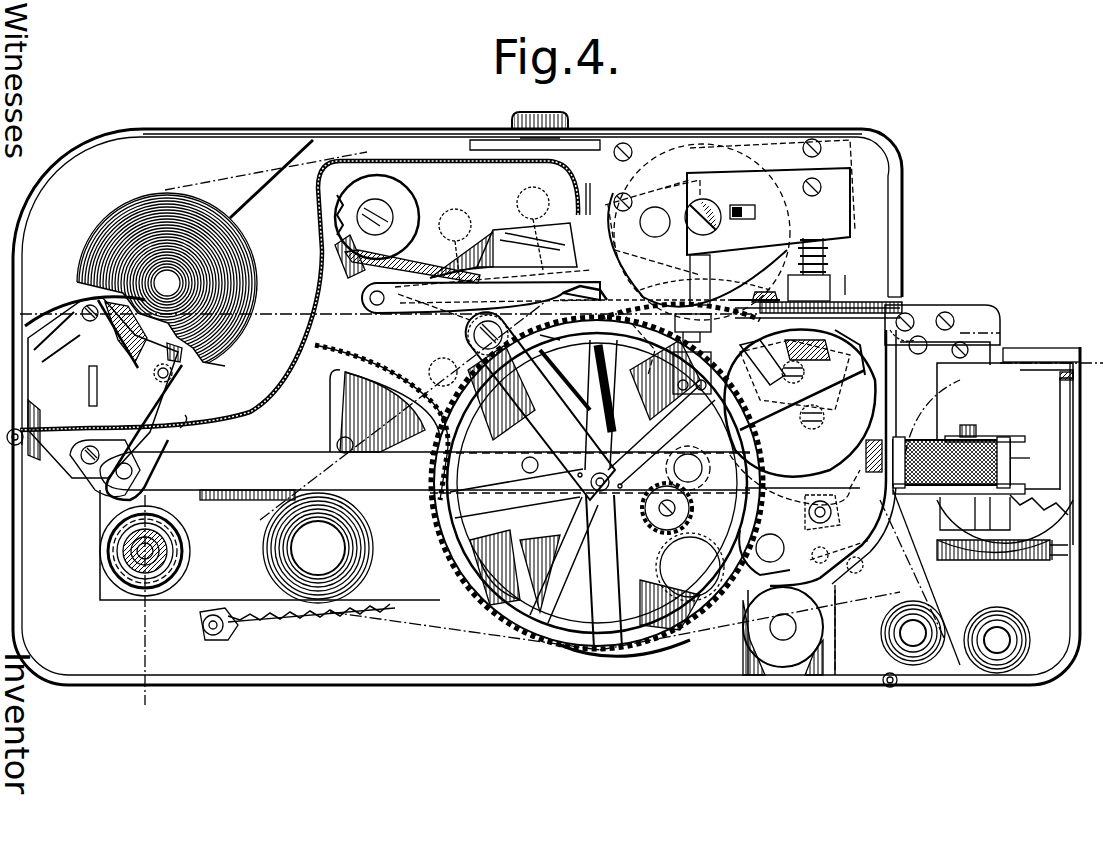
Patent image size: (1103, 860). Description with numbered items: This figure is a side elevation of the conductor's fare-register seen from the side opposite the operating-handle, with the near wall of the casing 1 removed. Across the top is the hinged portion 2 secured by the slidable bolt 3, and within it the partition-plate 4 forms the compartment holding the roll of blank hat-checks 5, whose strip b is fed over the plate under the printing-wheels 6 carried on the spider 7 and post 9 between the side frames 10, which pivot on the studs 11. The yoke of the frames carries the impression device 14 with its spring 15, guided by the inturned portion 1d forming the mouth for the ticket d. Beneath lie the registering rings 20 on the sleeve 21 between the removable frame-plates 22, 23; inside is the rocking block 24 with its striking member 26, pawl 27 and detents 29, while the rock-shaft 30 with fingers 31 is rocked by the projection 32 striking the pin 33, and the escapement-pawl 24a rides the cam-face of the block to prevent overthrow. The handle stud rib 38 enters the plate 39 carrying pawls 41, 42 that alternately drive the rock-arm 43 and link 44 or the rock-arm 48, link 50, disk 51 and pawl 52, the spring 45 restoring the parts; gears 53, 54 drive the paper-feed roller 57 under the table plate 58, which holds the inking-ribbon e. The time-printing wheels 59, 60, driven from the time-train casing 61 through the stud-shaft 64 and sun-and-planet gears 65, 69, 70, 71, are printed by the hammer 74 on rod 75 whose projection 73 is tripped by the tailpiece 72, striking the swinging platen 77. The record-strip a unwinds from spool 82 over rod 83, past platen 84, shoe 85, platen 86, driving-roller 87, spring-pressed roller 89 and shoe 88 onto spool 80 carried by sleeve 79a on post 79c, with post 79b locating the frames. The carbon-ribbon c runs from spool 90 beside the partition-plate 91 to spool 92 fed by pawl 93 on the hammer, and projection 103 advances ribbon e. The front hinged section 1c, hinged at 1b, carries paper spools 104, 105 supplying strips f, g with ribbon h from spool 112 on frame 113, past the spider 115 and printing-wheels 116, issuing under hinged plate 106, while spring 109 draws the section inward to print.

The casing 1 is at (890, 205).
The hinge of casing front end 1b is at (889, 688).
The hinged section 1c is at (1075, 584).
The inturned portion of casing 1d is at (858, 273).
The hinged portion 2 is at (194, 130).
The slidable bolt 3 is at (573, 134).
The partition-plate 4 is at (298, 378).
The roll of blank hat-checks 5 is at (262, 288).
The printing-wheels 6 is at (718, 296).
The spider 7 is at (700, 280).
The post 9 is at (1075, 382).
The side frames 10 is at (730, 207).
The studs 11 is at (699, 232).
The platen or impression device 14 is at (809, 288).
The spring 15 is at (812, 245).
The registering wheels or rings 20 is at (807, 335).
The sleeve 21 is at (847, 352).
The removable side frame-plate 22 is at (270, 545).
The companion removable side frame-plate 23 is at (590, 473).
The rocking block 24 is at (799, 403).
The escapement-pawl 24a is at (770, 478).
The striking member 26 is at (800, 418).
The pawl 27 is at (698, 455).
The spring-pressed detents 29 is at (780, 353).
The rock-shaft 30 is at (140, 510).
The fingers 31 is at (720, 362).
The projection 32 is at (762, 368).
The pin 33 is at (755, 306).
The transverse rib 38 is at (98, 392).
The plate 39 is at (101, 387).
The pawl 41 is at (120, 322).
The pawl 42 is at (110, 312).
The rock-arm 43 is at (134, 472).
The link 44 is at (425, 471).
The spring 45 is at (180, 360).
The rock-arm 48 is at (170, 430).
The link 50 is at (225, 500).
The disk 51 is at (350, 420).
The pawl 52 is at (230, 632).
The gear 53 is at (310, 625).
The gear 54 is at (645, 325).
The paper-feed roller 57 is at (915, 312).
The plate 58 is at (955, 305).
The printing-wheel 59 is at (470, 585).
The printing-wheel 60 is at (582, 485).
The casing 61 is at (495, 567).
The stud-shaft 64 is at (565, 470).
The gear 65 is at (540, 445).
The gear 69 is at (690, 567).
The gear 70 is at (667, 513).
The stationary gear 71 is at (578, 500).
The yielding tailpiece 72 is at (533, 228).
The lateral projection 73 is at (455, 246).
The printing-hammer 74 is at (503, 250).
The rod 75 is at (368, 305).
The swinging platen 77 is at (565, 308).
The sleeve 79a is at (135, 570).
The post 79b is at (770, 548).
The post 79c is at (122, 564).
The spool 80 is at (120, 555).
The spool 82 is at (318, 548).
The rod 83 is at (485, 345).
The platen 84 is at (693, 326).
The shoe 85 is at (895, 300).
The platen 86 is at (890, 448).
The driving-roller 87 is at (829, 511).
The shoe 88 is at (672, 636).
The spring-pressed roller 89 is at (830, 559).
The spool 90 is at (789, 631).
The partition-plate 91 is at (892, 365).
The spool 92 is at (377, 226).
The ribbon-feeding pawl 93 is at (415, 250).
The projection 103 is at (749, 198).
The spool of paper 104 is at (925, 660).
The spool of paper 105 is at (998, 668).
The hinged plate 106 is at (1040, 355).
The spring 109 is at (992, 560).
The spool 112 is at (1012, 443).
The frame 113 is at (1005, 454).
The spider 115 is at (982, 510).
The printing-wheels 116 is at (1008, 535).
The record-strip a is at (430, 360).
The hat-check strip b is at (300, 163).
The double-faced carbon-ribbon c is at (405, 320).
The ticket d is at (873, 305).
The inking-ribbon e is at (778, 298).
The strip f is at (1092, 360).
The strip g is at (938, 588).
The ribbon h is at (1024, 458).